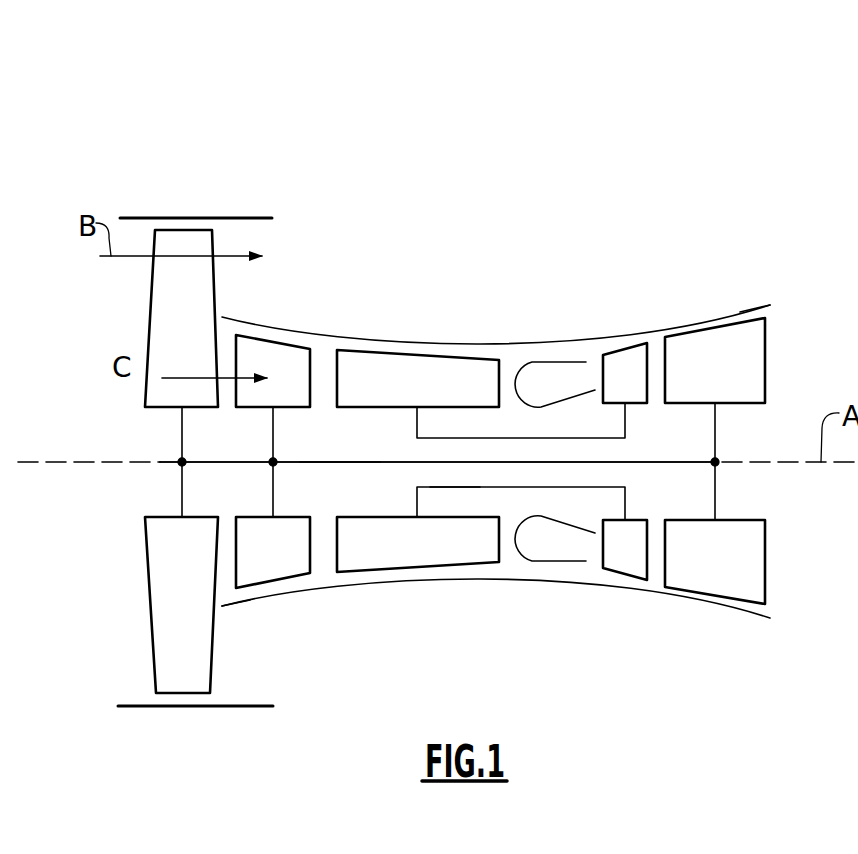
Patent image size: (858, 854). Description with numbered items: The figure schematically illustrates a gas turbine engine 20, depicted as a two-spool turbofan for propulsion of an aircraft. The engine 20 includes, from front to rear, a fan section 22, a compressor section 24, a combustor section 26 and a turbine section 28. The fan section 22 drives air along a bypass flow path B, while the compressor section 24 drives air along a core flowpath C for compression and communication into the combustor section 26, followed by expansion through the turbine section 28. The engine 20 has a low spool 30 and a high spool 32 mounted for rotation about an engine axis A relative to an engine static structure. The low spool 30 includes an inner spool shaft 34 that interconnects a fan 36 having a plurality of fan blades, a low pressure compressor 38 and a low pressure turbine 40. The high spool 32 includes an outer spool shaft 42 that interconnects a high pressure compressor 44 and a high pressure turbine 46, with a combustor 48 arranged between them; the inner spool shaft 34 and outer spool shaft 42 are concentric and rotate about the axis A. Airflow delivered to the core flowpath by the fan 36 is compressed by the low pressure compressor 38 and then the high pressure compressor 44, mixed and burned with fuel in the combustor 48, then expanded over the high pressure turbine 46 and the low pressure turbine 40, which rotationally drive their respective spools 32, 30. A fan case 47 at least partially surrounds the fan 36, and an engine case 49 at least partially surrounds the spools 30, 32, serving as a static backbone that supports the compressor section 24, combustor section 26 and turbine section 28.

The gas turbine engine 20 is at (114, 164).
The fan section 22 is at (126, 320).
The compressor section 24 is at (323, 308).
The combustor section 26 is at (540, 305).
The turbine section 28 is at (703, 275).
The low spool 30 is at (377, 463).
The high spool 32 is at (437, 488).
The inner spool shaft 34 is at (336, 464).
The fan 36 is at (199, 349).
The low pressure compressor 38 is at (258, 353).
The low pressure turbine 40 is at (706, 350).
The outer spool shaft 42 is at (453, 488).
The high pressure compressor 44 is at (389, 370).
The high pressure turbine 46 is at (627, 362).
The fan case 47 is at (243, 218).
The combustor 48 is at (543, 362).
The engine case 49 is at (750, 309).